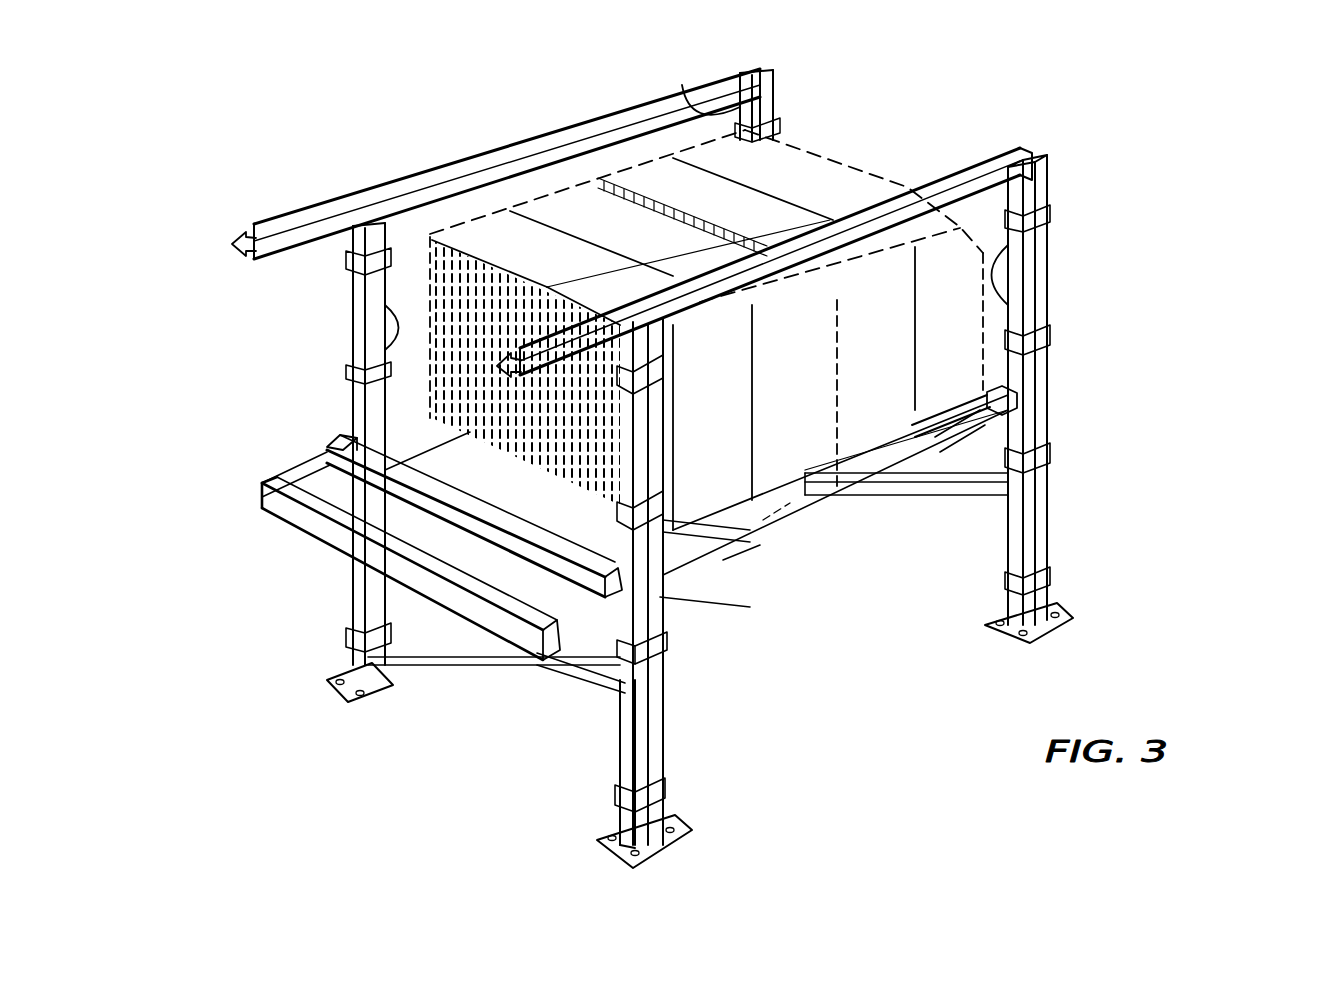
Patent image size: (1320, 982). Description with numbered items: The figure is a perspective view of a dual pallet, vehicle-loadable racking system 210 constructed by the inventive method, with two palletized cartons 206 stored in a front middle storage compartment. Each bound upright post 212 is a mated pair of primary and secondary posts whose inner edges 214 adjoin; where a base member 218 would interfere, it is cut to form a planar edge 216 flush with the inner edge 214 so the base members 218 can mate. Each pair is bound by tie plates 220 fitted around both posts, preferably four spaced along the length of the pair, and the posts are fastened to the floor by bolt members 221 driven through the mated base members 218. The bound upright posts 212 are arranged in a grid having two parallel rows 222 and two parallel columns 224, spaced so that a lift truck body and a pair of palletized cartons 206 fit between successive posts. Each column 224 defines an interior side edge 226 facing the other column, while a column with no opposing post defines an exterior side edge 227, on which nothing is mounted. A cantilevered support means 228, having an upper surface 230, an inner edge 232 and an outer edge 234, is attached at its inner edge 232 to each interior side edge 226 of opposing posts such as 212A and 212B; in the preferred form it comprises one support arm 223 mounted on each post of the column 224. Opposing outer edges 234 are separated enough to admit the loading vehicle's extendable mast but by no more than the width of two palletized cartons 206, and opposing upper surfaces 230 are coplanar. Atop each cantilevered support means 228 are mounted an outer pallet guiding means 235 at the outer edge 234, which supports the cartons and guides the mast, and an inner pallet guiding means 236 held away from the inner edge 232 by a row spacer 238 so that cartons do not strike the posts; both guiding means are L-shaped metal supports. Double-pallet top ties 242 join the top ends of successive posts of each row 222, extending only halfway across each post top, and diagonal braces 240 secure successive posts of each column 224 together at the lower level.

The palletized carton 206 is at (783, 388).
The racking system 210 is at (1090, 210).
The bound upright post 212 is at (352, 320).
The bound upright post 212A is at (665, 713).
The bound upright post 212B is at (1050, 500).
The inner edge 214 is at (665, 690).
The planar edge 216 is at (670, 845).
The base member 218 is at (613, 832).
The tie plate 220 is at (773, 128).
The bolt member 221 is at (603, 843).
The row 222 is at (325, 591).
The support arm 223 is at (723, 567).
The column 224 is at (680, 744).
The interior side edge 226 is at (1110, 265).
The exterior side edge 227 is at (772, 93).
The cantilevered support means 228 is at (570, 643).
The upper surface 230 is at (556, 606).
The inner edge 232 is at (660, 612).
The outer edge 234 is at (530, 651).
The outer pallet guiding means 235 is at (325, 522).
The inner pallet guiding means 236 is at (553, 493).
The row spacer 238 is at (345, 437).
The diagonal brace 240 is at (490, 680).
The double-pallet top tie 242 is at (513, 147).